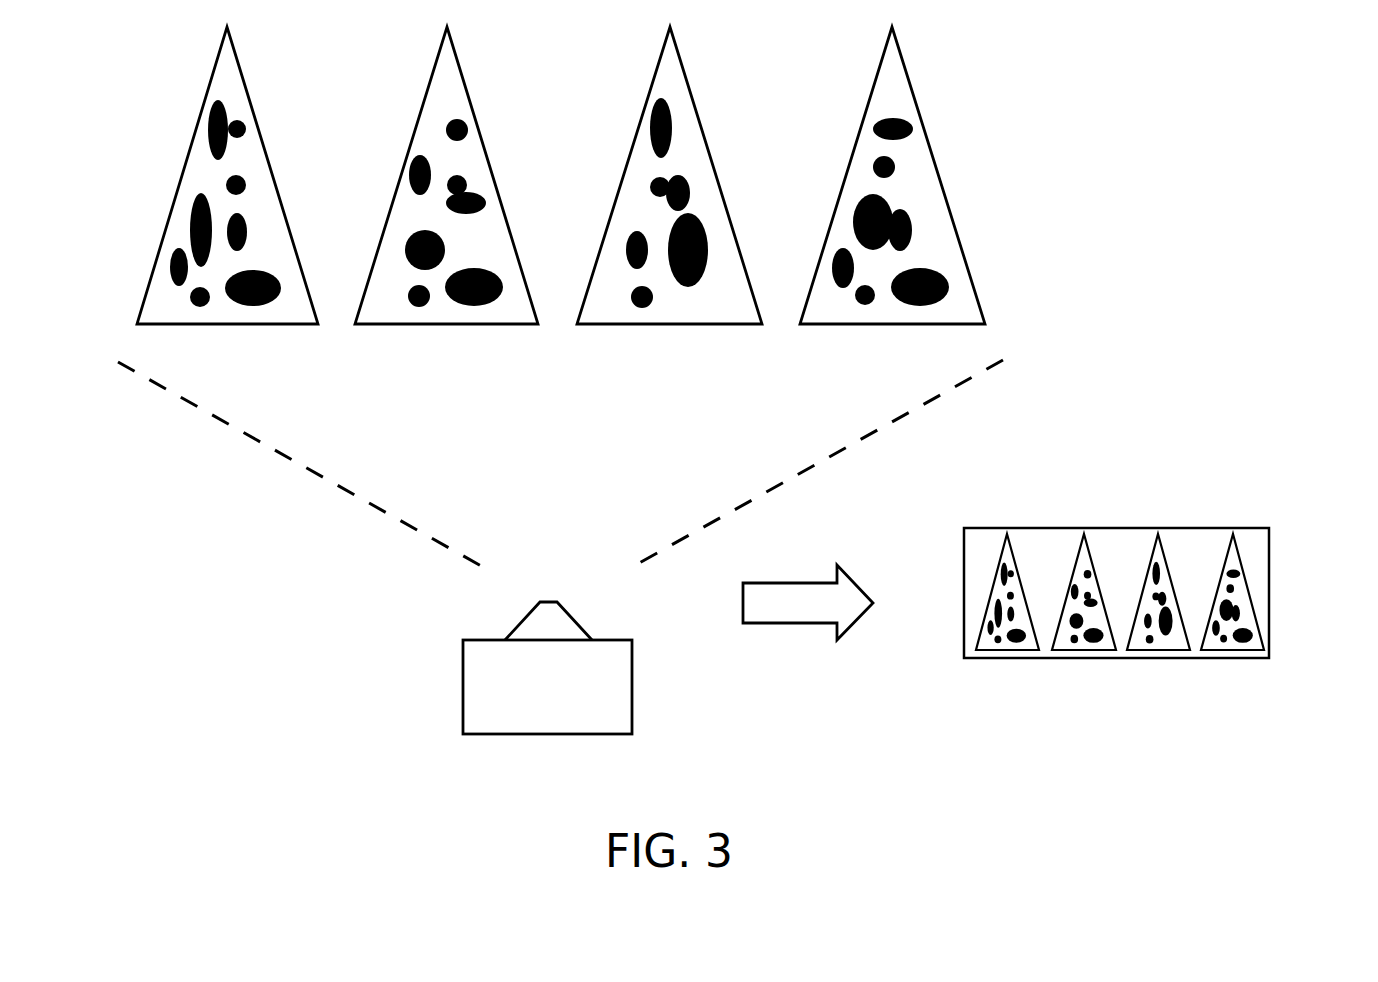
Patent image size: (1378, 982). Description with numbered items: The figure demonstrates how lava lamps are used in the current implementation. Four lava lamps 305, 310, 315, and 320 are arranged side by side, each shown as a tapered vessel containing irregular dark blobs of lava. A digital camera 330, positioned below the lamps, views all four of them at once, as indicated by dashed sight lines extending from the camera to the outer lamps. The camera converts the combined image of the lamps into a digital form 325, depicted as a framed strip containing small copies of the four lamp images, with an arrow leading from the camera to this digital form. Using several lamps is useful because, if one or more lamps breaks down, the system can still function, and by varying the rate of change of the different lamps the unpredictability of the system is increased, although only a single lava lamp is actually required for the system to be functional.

The lava lamp 305 is at (192, 137).
The lava lamp 310 is at (410, 137).
The lava lamp 315 is at (633, 137).
The lava lamp 320 is at (857, 137).
The digital form 325 is at (1270, 582).
The digital camera 330 is at (522, 717).